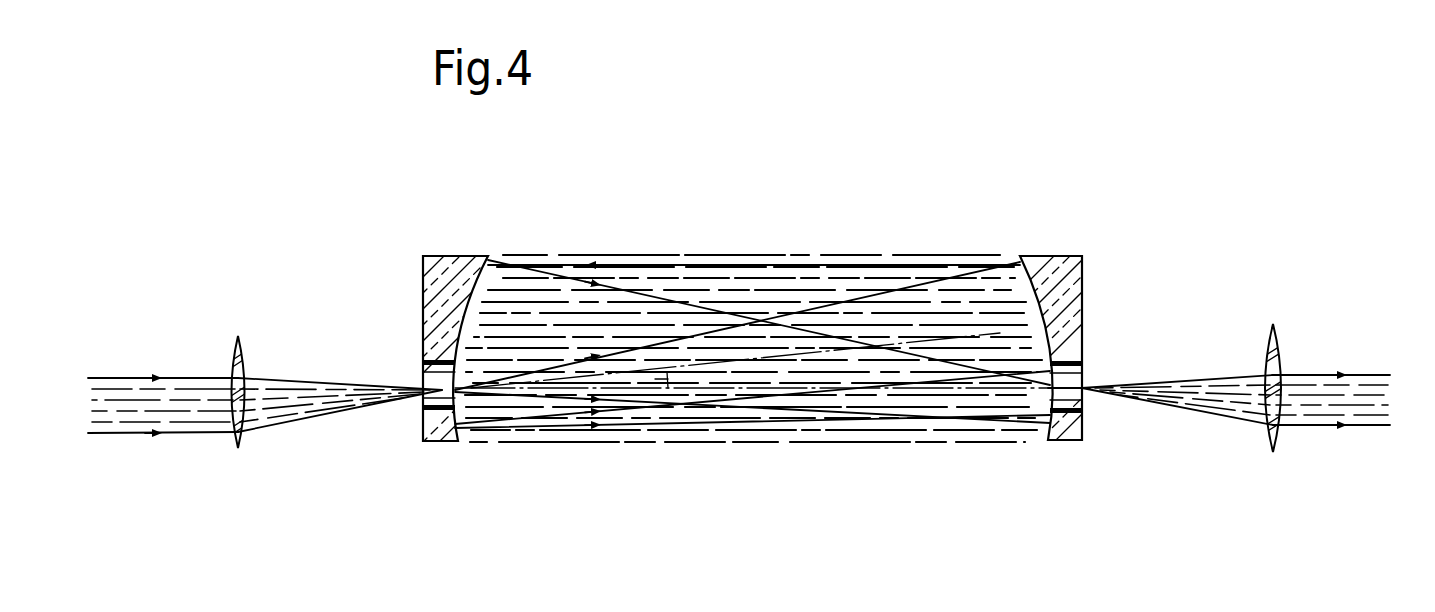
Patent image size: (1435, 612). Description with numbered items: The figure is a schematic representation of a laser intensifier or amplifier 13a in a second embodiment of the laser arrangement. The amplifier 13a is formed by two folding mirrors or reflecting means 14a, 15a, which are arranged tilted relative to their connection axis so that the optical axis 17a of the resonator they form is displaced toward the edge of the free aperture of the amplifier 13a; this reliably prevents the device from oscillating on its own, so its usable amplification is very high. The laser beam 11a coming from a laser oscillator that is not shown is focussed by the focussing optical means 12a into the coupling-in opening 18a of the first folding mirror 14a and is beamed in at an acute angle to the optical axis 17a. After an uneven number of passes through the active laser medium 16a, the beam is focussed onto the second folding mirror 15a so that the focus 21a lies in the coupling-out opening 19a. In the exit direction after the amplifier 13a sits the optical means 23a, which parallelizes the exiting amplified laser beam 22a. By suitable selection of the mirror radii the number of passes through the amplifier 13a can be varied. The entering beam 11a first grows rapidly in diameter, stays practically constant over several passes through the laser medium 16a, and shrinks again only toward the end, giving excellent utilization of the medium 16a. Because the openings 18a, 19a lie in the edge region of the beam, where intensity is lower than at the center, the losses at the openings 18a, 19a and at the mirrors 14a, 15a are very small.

The laser beam 11a is at (140, 416).
The focussing optical means 12a is at (237, 348).
The intensifier or amplifier 13a is at (758, 240).
The folding mirror or reflecting means 14a is at (445, 280).
The second folding mirror or reflecting means 15a is at (1058, 276).
The active laser medium 16a is at (876, 288).
The optical axis 17a is at (765, 392).
The coupling-in opening 18a is at (423, 362).
The coupling-out opening 19a is at (1082, 362).
The focus 21a is at (1076, 392).
The amplified laser beam 22a is at (1200, 395).
The optical means 23a is at (1279, 347).